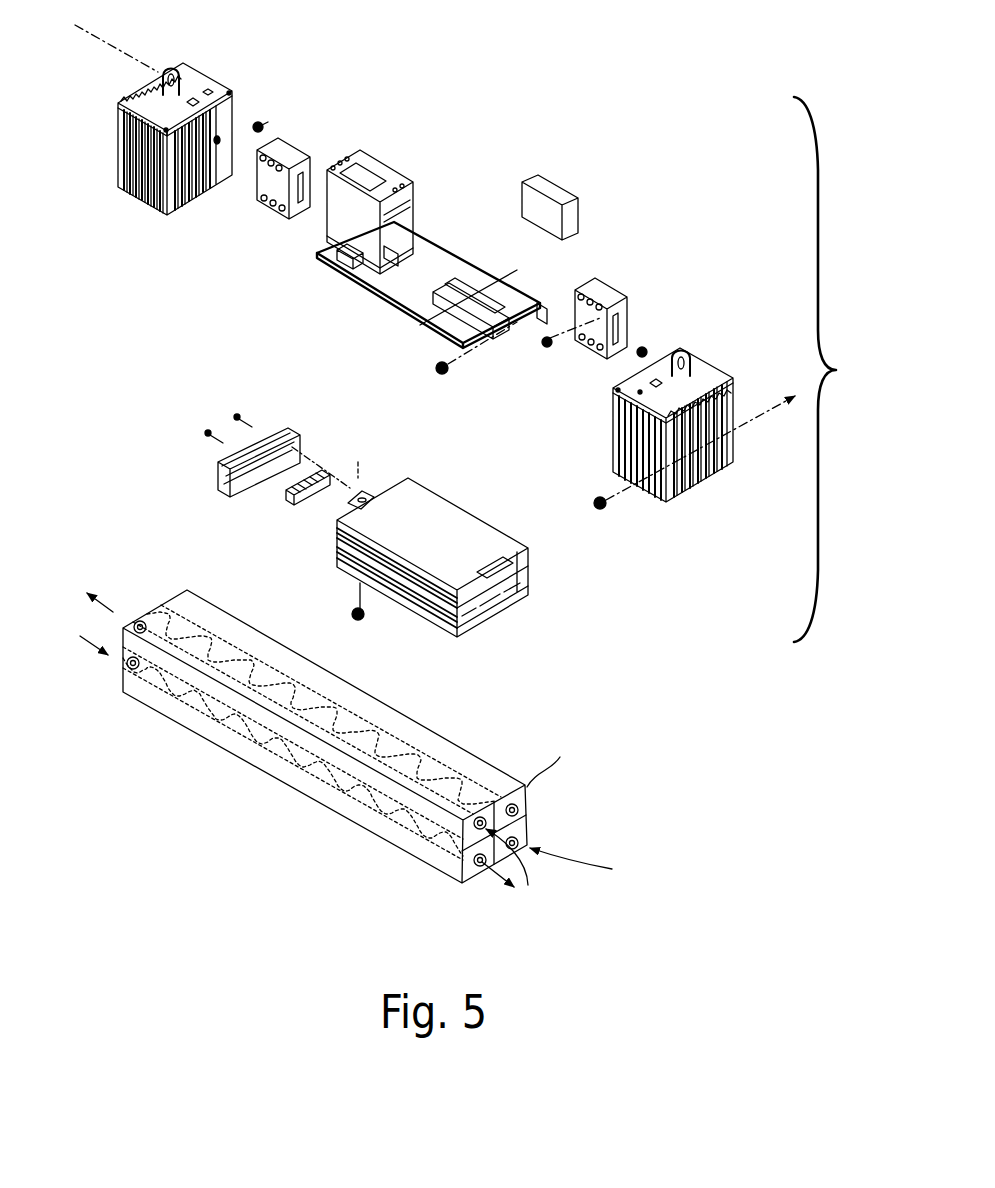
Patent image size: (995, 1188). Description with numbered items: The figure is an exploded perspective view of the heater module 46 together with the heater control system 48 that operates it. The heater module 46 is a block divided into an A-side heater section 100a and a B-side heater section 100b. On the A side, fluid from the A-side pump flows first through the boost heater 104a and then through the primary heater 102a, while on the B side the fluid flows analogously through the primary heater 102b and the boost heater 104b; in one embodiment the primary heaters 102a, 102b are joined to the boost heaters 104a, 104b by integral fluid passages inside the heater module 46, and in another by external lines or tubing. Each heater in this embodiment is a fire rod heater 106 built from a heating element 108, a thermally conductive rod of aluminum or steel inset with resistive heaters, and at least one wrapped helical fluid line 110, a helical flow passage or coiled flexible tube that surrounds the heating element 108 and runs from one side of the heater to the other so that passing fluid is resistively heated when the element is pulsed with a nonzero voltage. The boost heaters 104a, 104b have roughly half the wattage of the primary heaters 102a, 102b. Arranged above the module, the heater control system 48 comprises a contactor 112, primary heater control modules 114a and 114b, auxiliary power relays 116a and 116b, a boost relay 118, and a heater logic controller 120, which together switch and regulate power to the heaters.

The heater module 46 is at (344, 734).
The heater control system 48 is at (840, 369).
The A-side heater section 100a is at (324, 753).
The B-side heater section 100b is at (317, 709).
The primary heater 102a is at (473, 829).
The primary heater 102b is at (519, 809).
The boost heater 104a is at (478, 867).
The boost heater 104b is at (519, 843).
The fire rod heater 106 is at (316, 733).
The heating element 108 is at (240, 681).
The helical fluid line 110 is at (167, 684).
The contactor 112 is at (392, 163).
The primary heater control module 114a is at (224, 85).
The primary heater control module 114b is at (723, 373).
The auxiliary power relay 116a is at (293, 143).
The auxiliary power relay 116b is at (617, 292).
The boost relay 118 is at (560, 182).
The heater logic controller 120 is at (502, 613).